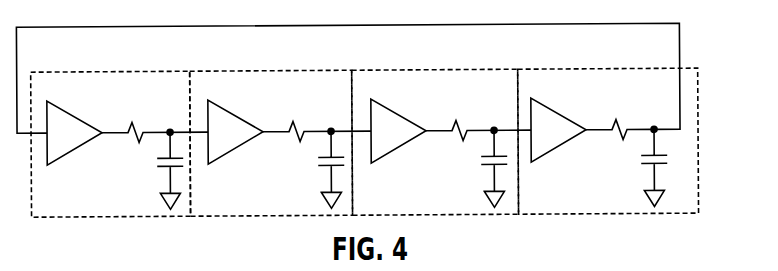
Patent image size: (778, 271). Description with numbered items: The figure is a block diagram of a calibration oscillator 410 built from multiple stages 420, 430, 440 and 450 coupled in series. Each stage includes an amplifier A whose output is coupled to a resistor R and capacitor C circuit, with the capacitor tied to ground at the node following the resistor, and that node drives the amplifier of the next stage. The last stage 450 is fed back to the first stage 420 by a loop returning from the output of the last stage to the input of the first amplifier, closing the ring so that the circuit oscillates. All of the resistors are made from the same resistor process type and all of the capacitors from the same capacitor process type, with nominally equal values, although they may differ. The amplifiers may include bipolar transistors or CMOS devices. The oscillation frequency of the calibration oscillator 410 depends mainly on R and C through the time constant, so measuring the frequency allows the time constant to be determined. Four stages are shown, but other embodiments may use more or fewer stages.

The calibration oscillator 410 is at (706, 126).
The first stage 420 is at (85, 70).
The second stage 430 is at (248, 70).
The third stage 440 is at (415, 70).
The last stage 450 is at (571, 70).